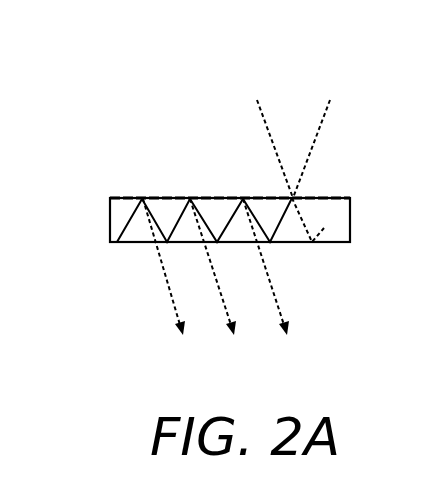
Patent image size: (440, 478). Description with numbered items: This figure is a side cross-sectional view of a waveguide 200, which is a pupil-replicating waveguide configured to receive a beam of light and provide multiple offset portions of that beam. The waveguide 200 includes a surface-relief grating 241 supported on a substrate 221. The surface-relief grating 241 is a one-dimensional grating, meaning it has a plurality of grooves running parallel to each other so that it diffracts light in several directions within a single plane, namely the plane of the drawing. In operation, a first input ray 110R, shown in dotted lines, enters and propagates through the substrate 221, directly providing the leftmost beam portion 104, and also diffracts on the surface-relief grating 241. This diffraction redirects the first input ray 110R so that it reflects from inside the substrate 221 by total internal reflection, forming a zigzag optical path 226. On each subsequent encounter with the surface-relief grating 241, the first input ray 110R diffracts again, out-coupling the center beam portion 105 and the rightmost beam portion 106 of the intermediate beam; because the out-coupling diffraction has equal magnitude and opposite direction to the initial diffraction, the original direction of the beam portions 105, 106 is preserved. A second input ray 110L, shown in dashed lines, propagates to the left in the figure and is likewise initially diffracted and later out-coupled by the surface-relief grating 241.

The waveguide 200 is at (155, 115).
The substrate 221 is at (110, 226).
The zigzag optical path 226 is at (176, 206).
The surface-relief grating 241 is at (143, 199).
The first input ray 110R is at (245, 140).
The second input ray 110L is at (339, 143).
The leftmost beam portion 104 is at (280, 282).
The center beam portion 105 is at (223, 282).
The rightmost beam portion 106 is at (170, 282).